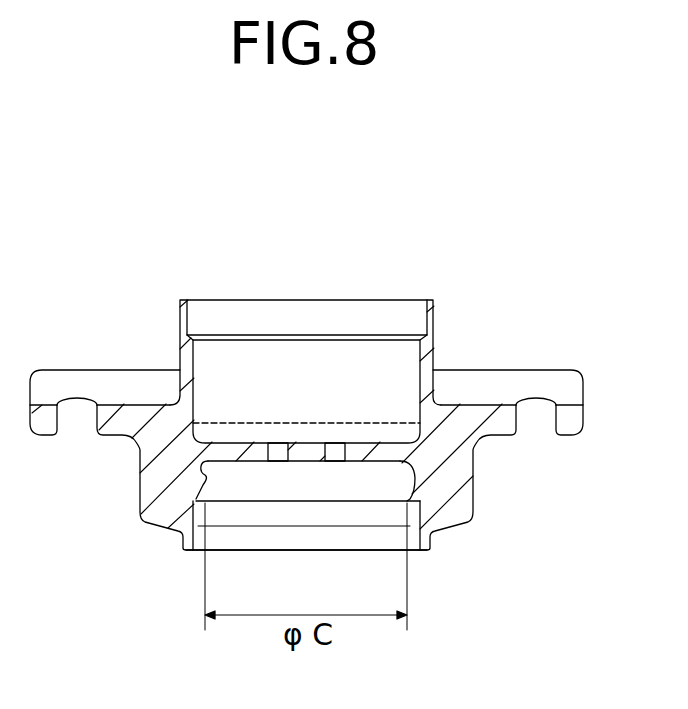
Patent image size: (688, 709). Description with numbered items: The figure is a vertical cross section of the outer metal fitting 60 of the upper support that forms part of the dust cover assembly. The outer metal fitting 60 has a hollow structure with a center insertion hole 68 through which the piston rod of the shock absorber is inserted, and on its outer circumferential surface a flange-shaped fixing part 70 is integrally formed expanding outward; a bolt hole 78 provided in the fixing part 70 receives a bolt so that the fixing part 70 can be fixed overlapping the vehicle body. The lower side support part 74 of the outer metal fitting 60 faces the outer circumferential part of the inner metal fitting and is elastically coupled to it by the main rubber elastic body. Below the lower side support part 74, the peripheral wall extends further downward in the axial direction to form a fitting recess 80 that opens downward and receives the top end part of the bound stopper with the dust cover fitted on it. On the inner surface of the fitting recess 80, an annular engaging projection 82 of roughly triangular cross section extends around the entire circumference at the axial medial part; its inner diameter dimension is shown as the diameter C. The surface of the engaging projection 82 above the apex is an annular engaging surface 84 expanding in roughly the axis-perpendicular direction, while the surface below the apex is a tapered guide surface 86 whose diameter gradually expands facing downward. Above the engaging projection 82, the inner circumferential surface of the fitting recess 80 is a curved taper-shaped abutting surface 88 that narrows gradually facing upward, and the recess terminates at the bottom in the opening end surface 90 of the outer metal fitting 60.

The outer metal fitting 60 is at (548, 256).
The fixing part 70 is at (124, 383).
The bolt hole 78 is at (57, 413).
The center insertion hole 68 is at (274, 448).
The lower side support part 74 is at (357, 445).
The abutting surface 88 is at (206, 470).
The fitting recess 80 is at (180, 495).
The engaging projection 82 is at (412, 498).
The engaging surface 84 is at (207, 503).
The guide surface 86 is at (410, 507).
The opening end surface 90 is at (423, 552).